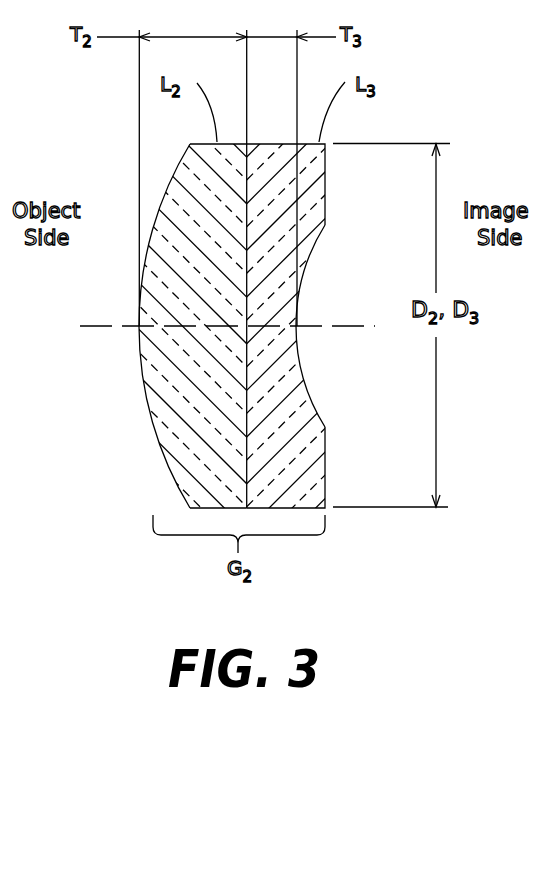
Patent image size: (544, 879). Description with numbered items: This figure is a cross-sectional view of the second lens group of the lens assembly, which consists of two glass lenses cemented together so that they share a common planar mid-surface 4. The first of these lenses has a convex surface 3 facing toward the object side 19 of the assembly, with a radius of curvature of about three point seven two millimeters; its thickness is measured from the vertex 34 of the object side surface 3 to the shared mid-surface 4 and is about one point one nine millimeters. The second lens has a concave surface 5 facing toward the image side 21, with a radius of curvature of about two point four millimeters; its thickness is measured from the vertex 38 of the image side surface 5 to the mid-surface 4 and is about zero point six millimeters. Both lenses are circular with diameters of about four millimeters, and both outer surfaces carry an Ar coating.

The convex surface 3 is at (155, 424).
The common planar mid-surface 4 is at (248, 183).
The concave surface 5 is at (303, 290).
The object side 19 is at (46, 266).
The image side 21 is at (497, 268).
The vertex 34 is at (138, 328).
The vertex 38 is at (299, 332).